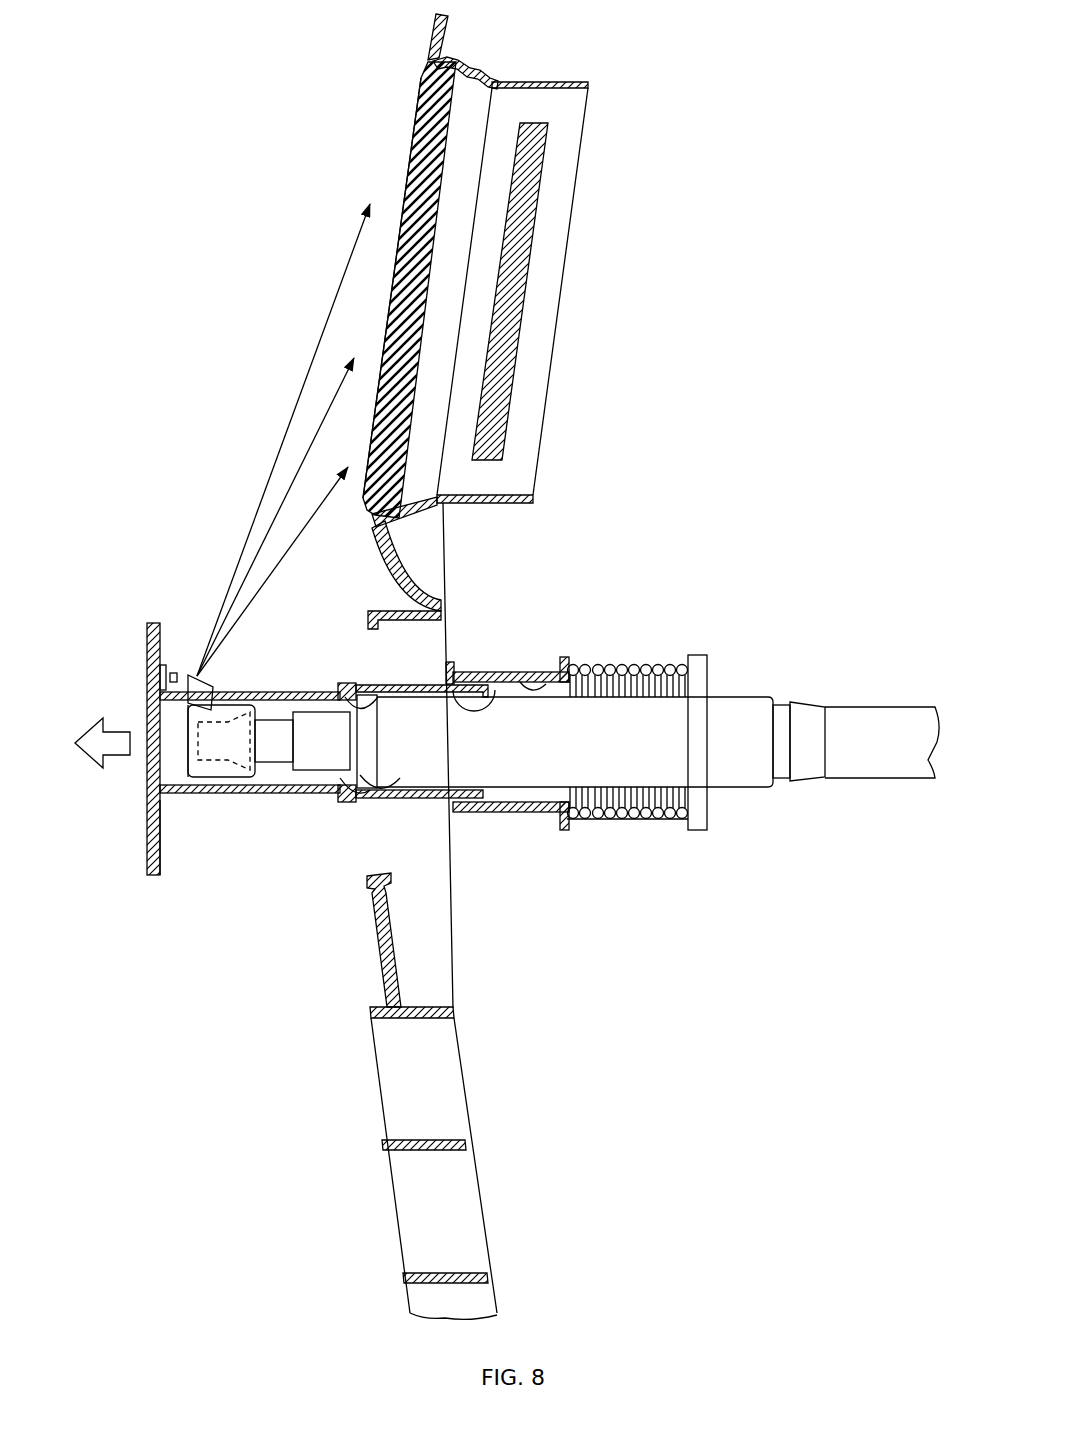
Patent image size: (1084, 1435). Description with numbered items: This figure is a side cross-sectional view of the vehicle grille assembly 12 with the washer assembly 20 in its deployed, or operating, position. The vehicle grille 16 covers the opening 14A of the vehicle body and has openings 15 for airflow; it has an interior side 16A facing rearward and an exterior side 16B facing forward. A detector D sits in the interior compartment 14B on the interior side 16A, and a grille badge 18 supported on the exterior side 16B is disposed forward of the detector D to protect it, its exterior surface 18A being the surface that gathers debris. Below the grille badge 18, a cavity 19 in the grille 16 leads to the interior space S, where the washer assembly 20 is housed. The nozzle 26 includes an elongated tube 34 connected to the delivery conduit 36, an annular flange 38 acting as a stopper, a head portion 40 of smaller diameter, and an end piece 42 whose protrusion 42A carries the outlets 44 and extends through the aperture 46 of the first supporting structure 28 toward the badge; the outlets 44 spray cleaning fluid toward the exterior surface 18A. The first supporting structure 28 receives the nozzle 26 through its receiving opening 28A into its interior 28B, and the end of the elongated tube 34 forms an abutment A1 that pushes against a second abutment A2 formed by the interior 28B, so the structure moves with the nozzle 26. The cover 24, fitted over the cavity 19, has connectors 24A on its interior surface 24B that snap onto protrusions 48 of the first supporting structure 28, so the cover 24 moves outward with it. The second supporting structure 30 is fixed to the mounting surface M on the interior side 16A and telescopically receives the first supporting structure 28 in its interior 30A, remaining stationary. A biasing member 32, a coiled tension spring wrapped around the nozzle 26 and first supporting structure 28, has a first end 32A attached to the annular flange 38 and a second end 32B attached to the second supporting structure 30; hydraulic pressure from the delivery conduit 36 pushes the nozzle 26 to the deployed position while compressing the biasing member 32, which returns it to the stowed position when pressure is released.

The vehicle grille assembly 12 is at (846, 116).
The interior space S is at (742, 455).
The detector D is at (530, 242).
The mounting surface M is at (446, 565).
The opening 14A is at (496, 78).
The interior compartment 14B is at (565, 107).
The openings 15 is at (430, 1097).
The vehicle grille 16 is at (383, 960).
The interior side 16A is at (520, 567).
The exterior side 16B is at (152, 580).
The grille badge 18 is at (428, 124).
The exterior surface 18A is at (398, 183).
The cavity 19 is at (368, 626).
The washer assembly 20 is at (672, 550).
The cover 24 is at (147, 833).
The connectors 24A is at (175, 672).
The interior surface 24B is at (162, 850).
The nozzle 26 is at (617, 690).
The first supporting structure 28 is at (398, 685).
The receiving opening 28A is at (491, 684).
The interior 28B is at (330, 800).
The second supporting structure 30 is at (513, 812).
The interior 30A is at (557, 670).
The biasing member 32 is at (648, 819).
The first end 32A is at (684, 667).
The second end 32B is at (572, 816).
The elongated tube 34 is at (630, 763).
The delivery conduit 36 is at (875, 705).
The annular flange 38 is at (708, 672).
The head portion 40 is at (295, 765).
The end piece 42 is at (215, 778).
The protrusion 42A is at (190, 713).
The outlets 44 is at (205, 688).
The aperture 46 is at (224, 741).
The protrusions 48 is at (150, 647).
The abutment A1 is at (360, 775).
The abutment A2 is at (355, 708).